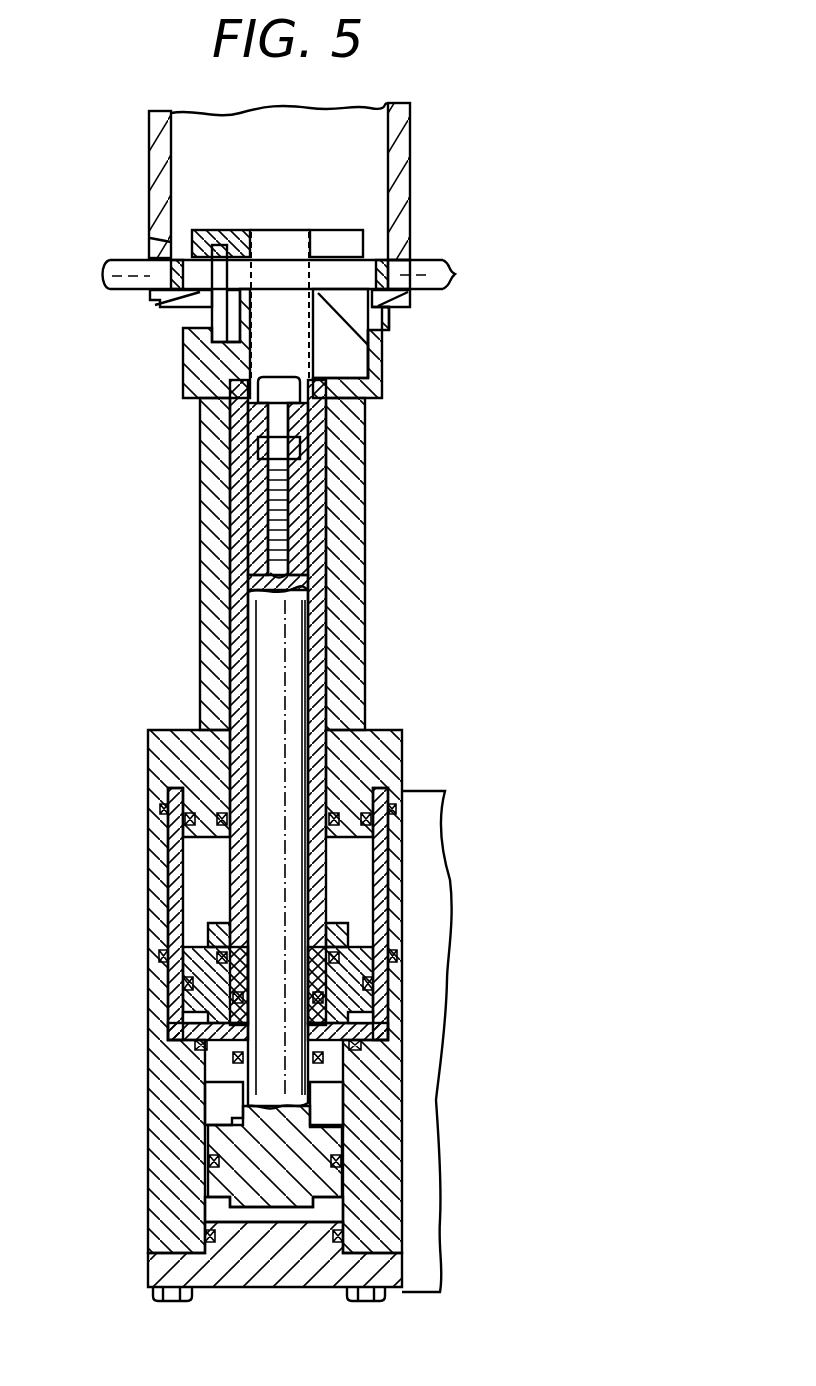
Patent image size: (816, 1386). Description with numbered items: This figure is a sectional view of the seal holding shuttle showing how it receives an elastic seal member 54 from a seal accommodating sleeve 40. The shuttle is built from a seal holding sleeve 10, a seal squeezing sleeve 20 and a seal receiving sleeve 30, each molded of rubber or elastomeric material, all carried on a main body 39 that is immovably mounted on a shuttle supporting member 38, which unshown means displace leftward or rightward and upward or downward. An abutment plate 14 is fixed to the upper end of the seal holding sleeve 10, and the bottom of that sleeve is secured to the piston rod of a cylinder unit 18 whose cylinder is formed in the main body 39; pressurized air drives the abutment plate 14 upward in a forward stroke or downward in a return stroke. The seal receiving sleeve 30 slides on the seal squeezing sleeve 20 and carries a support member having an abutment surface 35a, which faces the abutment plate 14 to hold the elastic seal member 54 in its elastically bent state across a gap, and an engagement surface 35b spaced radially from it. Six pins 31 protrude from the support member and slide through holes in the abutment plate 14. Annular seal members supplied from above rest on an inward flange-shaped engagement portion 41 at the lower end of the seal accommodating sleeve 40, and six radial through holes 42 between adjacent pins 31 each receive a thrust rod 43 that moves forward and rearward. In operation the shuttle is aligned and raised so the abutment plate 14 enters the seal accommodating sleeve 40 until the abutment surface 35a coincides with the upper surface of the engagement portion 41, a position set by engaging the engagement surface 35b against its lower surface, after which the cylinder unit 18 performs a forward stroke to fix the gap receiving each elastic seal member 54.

The seal accommodating sleeve 40 is at (410, 140).
The abutment plate 14 is at (348, 230).
The thrust rod 43 is at (100, 260).
The elastic seal member 54 is at (152, 240).
The abutment surface 35a is at (160, 300).
The pin 31 is at (205, 310).
The through hole 42 is at (407, 263).
The engagement portion 41 is at (395, 320).
The engagement surface 35b is at (322, 350).
The seal holding sleeve 10 is at (385, 378).
The seal receiving sleeve 30 is at (365, 613).
The seal squeezing sleeve 20 is at (330, 555).
The cylinder unit 18 is at (335, 1100).
The main body 39 is at (155, 1098).
The shuttle supporting member 38 is at (430, 815).